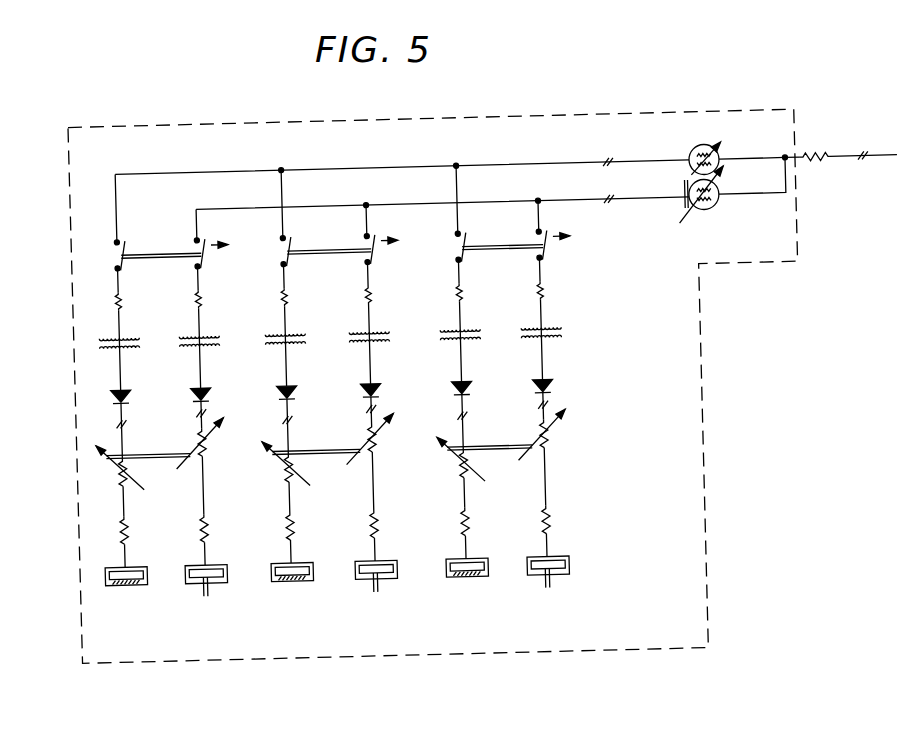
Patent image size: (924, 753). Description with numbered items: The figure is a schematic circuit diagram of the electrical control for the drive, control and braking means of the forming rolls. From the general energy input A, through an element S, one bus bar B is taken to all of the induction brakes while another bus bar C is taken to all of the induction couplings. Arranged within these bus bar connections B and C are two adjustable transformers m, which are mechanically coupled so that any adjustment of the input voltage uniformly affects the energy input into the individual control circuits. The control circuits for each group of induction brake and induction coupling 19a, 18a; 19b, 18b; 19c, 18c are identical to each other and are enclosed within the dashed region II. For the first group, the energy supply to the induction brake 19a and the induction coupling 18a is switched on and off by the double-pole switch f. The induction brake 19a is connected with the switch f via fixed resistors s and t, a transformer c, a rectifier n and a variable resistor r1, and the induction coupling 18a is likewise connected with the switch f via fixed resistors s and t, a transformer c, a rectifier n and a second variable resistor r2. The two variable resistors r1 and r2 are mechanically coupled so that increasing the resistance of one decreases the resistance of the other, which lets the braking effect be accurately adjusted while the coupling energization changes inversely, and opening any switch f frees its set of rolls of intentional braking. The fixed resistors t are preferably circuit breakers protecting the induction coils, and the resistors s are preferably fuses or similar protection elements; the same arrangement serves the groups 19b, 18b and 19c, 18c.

The induction brake 19a is at (131, 580).
The induction coupling 18a is at (204, 581).
The induction brake 19b is at (297, 580).
The induction coupling 18b is at (374, 581).
The induction brake 19c is at (472, 580).
The induction coupling 18c is at (546, 581).
The control unit enclosure II is at (441, 639).
The bus bar B is at (393, 166).
The bus bar C is at (411, 203).
The double-pole switch f is at (342, 245).
The fixed resistor s is at (126, 300).
The transformer c is at (141, 341).
The rectifier n is at (133, 393).
The variable resistor r1 is at (289, 469).
The second variable resistor r2 is at (336, 440).
The fixed resistor t is at (128, 526).
The adjustable transformer m is at (696, 158).
The input resistor S is at (828, 160).
The general energy input A is at (897, 163).